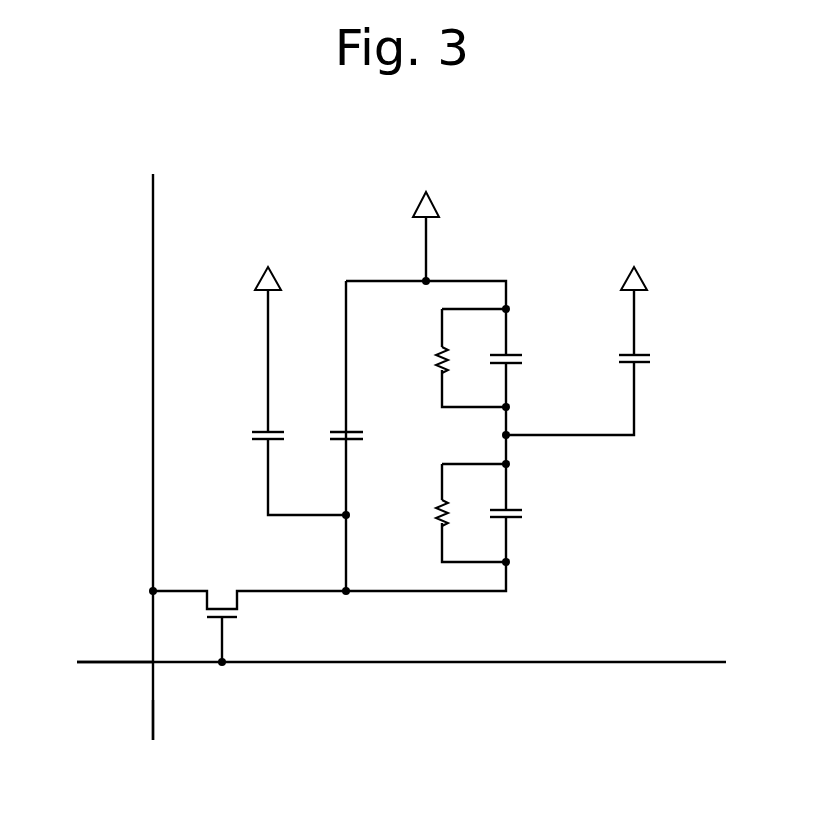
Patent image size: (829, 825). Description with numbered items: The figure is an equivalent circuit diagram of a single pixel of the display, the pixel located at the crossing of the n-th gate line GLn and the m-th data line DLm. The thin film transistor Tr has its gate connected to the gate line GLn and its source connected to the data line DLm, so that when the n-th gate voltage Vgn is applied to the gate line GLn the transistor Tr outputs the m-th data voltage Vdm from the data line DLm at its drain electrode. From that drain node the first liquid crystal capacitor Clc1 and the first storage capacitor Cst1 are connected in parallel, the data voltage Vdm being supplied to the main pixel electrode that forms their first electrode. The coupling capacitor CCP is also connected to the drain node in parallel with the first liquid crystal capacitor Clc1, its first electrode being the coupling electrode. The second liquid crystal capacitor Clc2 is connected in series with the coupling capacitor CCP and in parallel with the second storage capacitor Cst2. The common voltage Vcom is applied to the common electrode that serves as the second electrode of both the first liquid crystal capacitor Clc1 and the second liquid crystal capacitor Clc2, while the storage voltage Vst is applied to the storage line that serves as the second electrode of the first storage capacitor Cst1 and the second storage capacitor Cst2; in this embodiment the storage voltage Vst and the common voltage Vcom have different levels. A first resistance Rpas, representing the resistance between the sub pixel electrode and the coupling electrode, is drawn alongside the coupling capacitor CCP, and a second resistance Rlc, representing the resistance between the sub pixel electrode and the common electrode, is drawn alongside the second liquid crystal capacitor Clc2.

The data line DLm is at (153, 318).
The gate line GLn is at (448, 663).
The thin film transistor Tr is at (247, 609).
The data voltage Vdm is at (154, 734).
The gate voltage Vgn is at (94, 663).
The common voltage Vcom is at (428, 225).
The storage voltage Vst is at (448, 336).
The first storage capacitor Cst1 is at (274, 470).
The first liquid crystal capacitor Clc1 is at (366, 434).
The second liquid crystal capacitor Clc2 is at (527, 386).
The second resistance Rlc is at (454, 358).
The first resistance Rpas is at (447, 513).
The coupling capacitor CCP is at (526, 513).
The second storage capacitor Cst2 is at (597, 393).